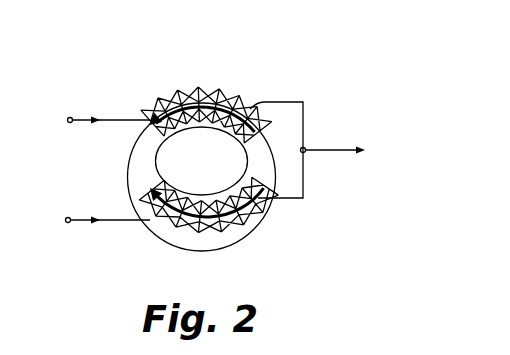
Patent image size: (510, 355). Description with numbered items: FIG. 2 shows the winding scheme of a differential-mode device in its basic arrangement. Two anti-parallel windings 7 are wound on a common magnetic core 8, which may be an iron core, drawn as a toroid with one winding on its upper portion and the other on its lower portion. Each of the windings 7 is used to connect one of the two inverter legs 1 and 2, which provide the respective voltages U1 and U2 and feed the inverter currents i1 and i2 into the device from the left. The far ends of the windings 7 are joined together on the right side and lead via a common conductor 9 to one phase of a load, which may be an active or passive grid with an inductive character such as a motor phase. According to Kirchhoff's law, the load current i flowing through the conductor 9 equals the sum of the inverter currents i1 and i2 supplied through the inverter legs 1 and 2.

The inverter leg 1 is at (111, 118).
The inverter leg 2 is at (108, 222).
The anti-parallel windings 7 is at (230, 102).
The common magnetic core 8 is at (218, 70).
The common conductor 9 is at (217, 232).